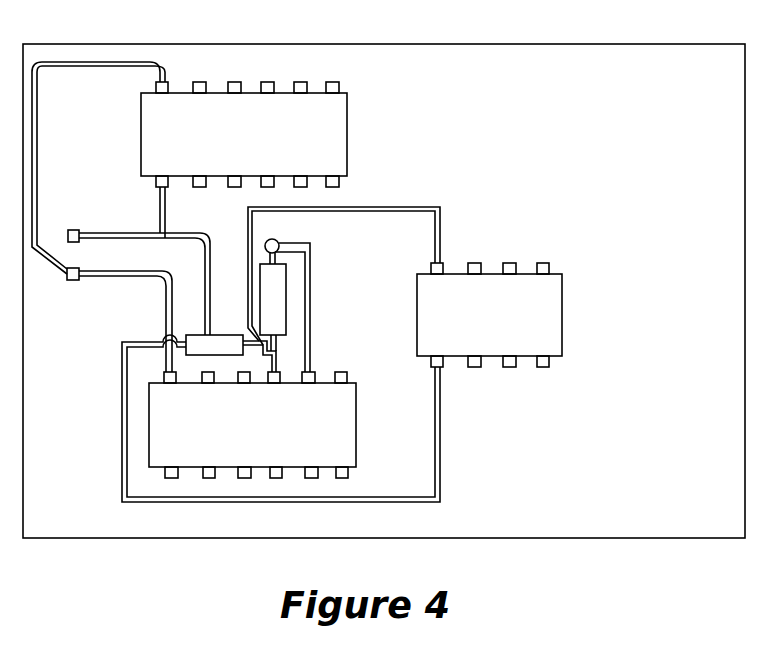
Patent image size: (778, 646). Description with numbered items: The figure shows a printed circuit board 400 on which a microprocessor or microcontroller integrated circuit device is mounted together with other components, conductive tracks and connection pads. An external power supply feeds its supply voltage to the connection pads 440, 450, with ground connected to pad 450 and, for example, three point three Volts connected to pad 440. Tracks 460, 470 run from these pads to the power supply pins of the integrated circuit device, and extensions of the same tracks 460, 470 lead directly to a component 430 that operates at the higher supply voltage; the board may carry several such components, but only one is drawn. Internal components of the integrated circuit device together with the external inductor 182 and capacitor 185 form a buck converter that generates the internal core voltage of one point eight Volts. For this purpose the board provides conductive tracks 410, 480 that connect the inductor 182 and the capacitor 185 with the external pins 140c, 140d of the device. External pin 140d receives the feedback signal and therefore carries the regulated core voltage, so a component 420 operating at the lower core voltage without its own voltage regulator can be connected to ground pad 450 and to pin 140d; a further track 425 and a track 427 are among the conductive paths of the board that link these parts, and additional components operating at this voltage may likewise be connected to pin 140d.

The circuit board 400 is at (440, 44).
The component 430 is at (244, 134).
The component 420 is at (489, 315).
The capacitor 185 is at (232, 345).
The inductor 182 is at (281, 322).
The conductive track 480 is at (309, 262).
The conductive track 410 is at (273, 352).
The external pin 140c is at (309, 372).
The external pin 140d is at (274, 384).
The conductive track 425 is at (374, 207).
The wire connection 427 is at (441, 440).
The connection pad 440 is at (75, 230).
The connection pad 450 is at (78, 268).
The conductive track 460 is at (190, 233).
The conductive track 470 is at (141, 272).